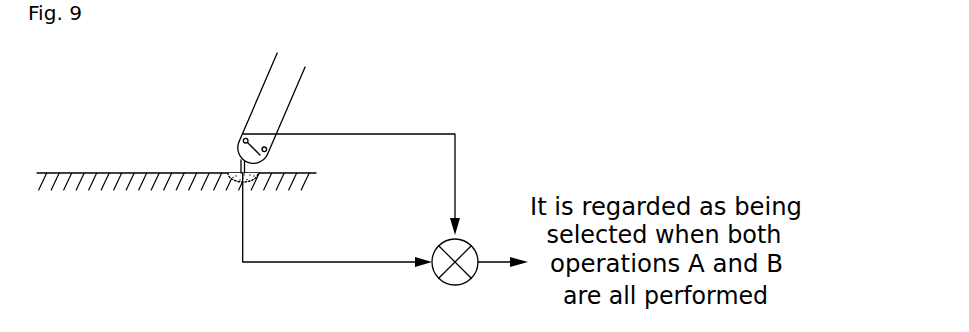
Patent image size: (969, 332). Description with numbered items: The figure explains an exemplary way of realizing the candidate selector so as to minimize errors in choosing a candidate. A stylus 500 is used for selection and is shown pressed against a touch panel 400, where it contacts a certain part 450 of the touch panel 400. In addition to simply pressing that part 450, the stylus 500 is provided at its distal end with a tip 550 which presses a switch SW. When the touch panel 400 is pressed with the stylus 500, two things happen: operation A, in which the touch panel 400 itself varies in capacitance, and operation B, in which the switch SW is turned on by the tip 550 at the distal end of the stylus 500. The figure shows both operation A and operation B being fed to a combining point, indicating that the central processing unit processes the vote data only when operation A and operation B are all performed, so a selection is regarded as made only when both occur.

The touch panel 400 is at (78, 173).
The certain part of the touch panel 450 is at (252, 182).
The stylus 500 is at (265, 81).
The tip 550 is at (240, 168).
The switch SW is at (267, 150).
The operation A is at (321, 220).
The operation B is at (351, 168).